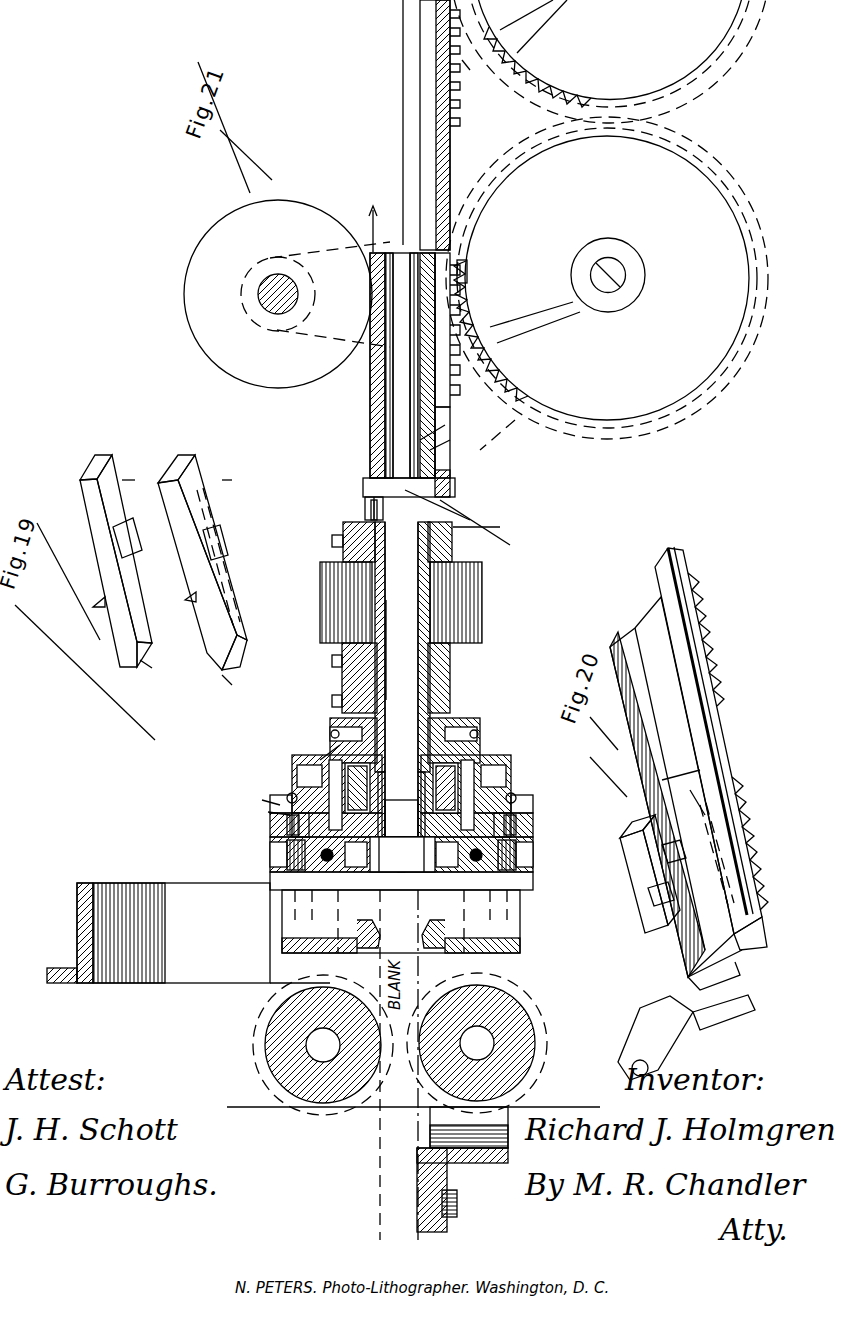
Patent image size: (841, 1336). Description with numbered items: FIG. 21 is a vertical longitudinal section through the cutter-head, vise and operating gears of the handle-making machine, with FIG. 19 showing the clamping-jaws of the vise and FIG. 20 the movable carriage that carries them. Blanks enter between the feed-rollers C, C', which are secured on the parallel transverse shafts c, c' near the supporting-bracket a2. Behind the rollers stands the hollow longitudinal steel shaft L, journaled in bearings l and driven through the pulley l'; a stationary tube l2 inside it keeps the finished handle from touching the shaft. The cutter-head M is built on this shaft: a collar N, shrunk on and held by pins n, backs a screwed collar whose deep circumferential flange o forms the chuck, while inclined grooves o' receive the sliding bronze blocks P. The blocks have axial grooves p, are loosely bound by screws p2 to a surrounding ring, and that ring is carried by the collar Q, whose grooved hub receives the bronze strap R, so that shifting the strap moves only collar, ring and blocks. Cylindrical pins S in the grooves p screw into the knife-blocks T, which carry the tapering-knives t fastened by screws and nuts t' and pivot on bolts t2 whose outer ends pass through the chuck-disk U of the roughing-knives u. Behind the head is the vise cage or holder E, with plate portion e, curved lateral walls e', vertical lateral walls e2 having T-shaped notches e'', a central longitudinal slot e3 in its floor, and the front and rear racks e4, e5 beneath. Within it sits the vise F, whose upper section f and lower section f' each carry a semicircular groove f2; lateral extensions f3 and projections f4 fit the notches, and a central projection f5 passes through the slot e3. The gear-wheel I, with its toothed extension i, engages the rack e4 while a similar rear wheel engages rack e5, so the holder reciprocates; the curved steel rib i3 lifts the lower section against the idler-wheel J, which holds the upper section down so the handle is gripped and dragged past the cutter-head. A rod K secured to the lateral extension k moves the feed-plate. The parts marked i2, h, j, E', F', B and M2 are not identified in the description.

In FIG. 21, the gear-wheel I is at (700, 90).
In FIG. 21, the gear wheel i2 is at (525, 50).
In FIG. 21, the extension i is at (500, 350).
In FIG. 21, the curved steel rib i3 is at (467, 270).
In FIG. 21, the hub h is at (608, 275).
In FIG. 21, the plate portion e is at (431, 125).
In FIG. 20, the plate portion e is at (672, 787).
In FIG. 21, the rear rack e5 is at (467, 81).
In FIG. 20, the rear rack e5 is at (711, 748).
In FIG. 21, the central longitudinal slot e3 is at (437, 494).
In FIG. 20, the central longitudinal slot e3 is at (690, 807).
In FIG. 21, the front rack e4 is at (460, 430).
In FIG. 20, the front rack e4 is at (756, 843).
In FIG. 20, the curved lateral walls e' is at (736, 890).
In FIG. 20, the vertical lateral walls e2 is at (650, 905).
In FIG. 20, the notches or openings e'' is at (714, 1004).
In FIG. 21, the vise cage or holder E is at (481, 522).
In FIG. 20, the bracket E' is at (632, 874).
In FIG. 21, the idler-wheel J is at (287, 294).
In FIG. 21, the crank pin j is at (272, 277).
In FIG. 21, the vise F is at (402, 375).
In FIG. 21, the upper section f is at (373, 365).
In FIG. 19, the upper section f is at (116, 565).
In FIG. 21, the lower section f' is at (448, 438).
In FIG. 19, the lower section f' is at (202, 562).
In FIG. 21, the semicircular groove f2 is at (382, 225).
In FIG. 19, the semicircular groove f2 is at (186, 677).
In FIG. 19, the lateral extensions f3 is at (184, 543).
In FIG. 19, the central lateral projections f4 is at (122, 551).
In FIG. 19, the central longitudinal projection f5 is at (235, 475).
In FIG. 19, the slide bar F' is at (136, 482).
In FIG. 21, the rod K is at (365, 510).
In FIG. 21, the lateral extension k is at (358, 489).
In FIG. 20, the lateral extension k is at (640, 1030).
In FIG. 21, the hollow longitudinal steel shaft L is at (502, 560).
In FIG. 21, the bearings l is at (382, 614).
In FIG. 21, the pulley l' is at (387, 602).
In FIG. 21, the stationary tube l2 is at (445, 660).
In FIG. 21, the cylindrical pins S is at (400, 740).
In FIG. 21, the bronze strap R is at (412, 745).
In FIG. 21, the collar Q is at (520, 745).
In FIG. 21, the bronze blocks P is at (300, 775).
In FIG. 21, the grooves p is at (256, 795).
In FIG. 21, the screws p2 is at (390, 787).
In FIG. 21, the circumferential flange o is at (392, 810).
In FIG. 21, the grooves o' is at (407, 773).
In FIG. 21, the cutter-head M is at (272, 822).
In FIG. 21, the collar N is at (401, 806).
In FIG. 21, the pins n is at (398, 819).
In FIG. 21, the bolts t2 is at (283, 850).
In FIG. 21, the tapering-knives t is at (365, 847).
In FIG. 21, the screws and nuts t' is at (401, 870).
In FIG. 21, the knife-blocks T is at (401, 889).
In FIG. 21, the chuck-disk U is at (401, 928).
In FIG. 21, the roughing-knives u is at (401, 934).
In FIG. 21, the feed-roller C is at (493, 1043).
In FIG. 21, the feed-roller C' is at (307, 1045).
In FIG. 21, the transverse shaft c is at (506, 1061).
In FIG. 21, the transverse shaft c' is at (322, 1084).
In FIG. 21, the frame B is at (405, 1218).
In FIG. 21, the supporting-bracket a2 is at (458, 1192).
In FIG. 21, the magnet block M2 is at (188, 933).